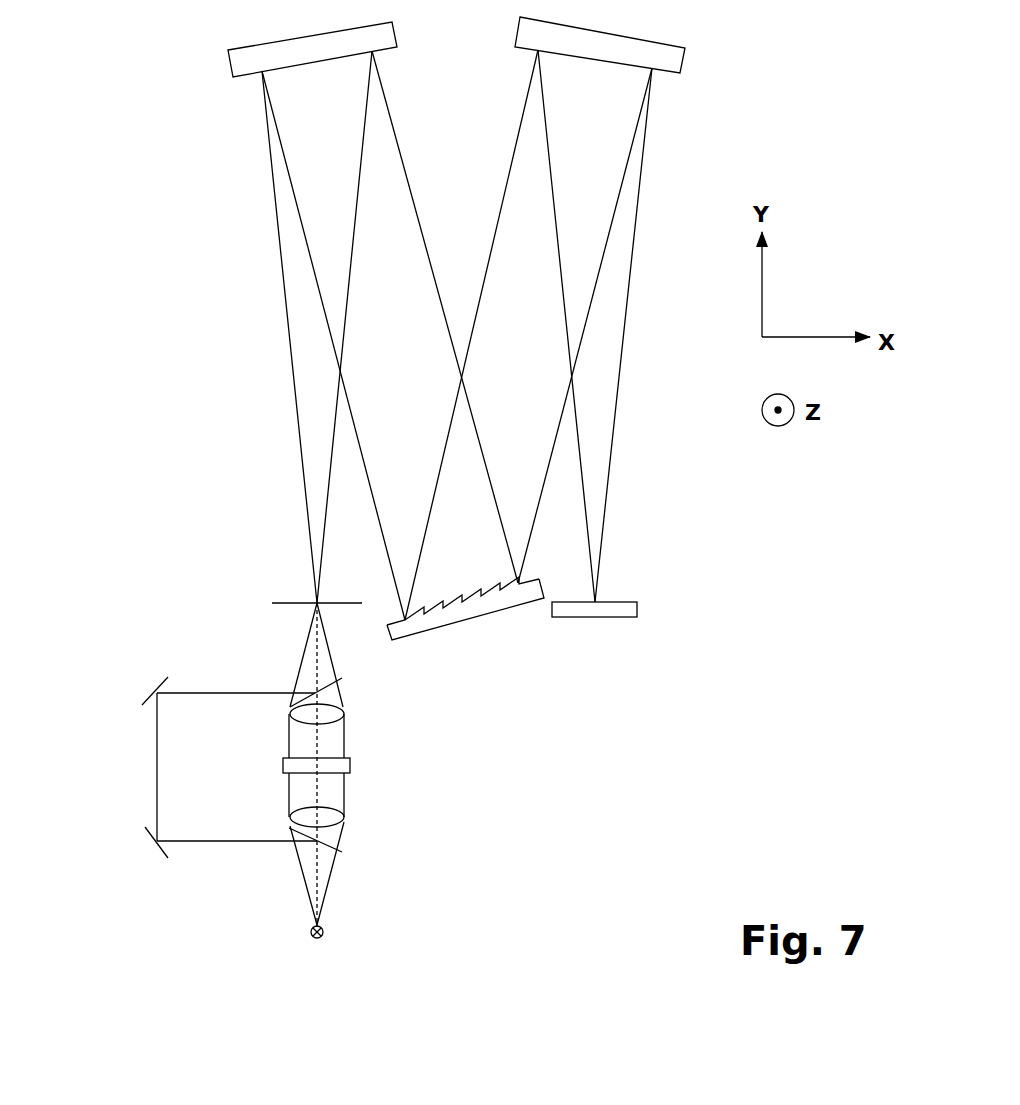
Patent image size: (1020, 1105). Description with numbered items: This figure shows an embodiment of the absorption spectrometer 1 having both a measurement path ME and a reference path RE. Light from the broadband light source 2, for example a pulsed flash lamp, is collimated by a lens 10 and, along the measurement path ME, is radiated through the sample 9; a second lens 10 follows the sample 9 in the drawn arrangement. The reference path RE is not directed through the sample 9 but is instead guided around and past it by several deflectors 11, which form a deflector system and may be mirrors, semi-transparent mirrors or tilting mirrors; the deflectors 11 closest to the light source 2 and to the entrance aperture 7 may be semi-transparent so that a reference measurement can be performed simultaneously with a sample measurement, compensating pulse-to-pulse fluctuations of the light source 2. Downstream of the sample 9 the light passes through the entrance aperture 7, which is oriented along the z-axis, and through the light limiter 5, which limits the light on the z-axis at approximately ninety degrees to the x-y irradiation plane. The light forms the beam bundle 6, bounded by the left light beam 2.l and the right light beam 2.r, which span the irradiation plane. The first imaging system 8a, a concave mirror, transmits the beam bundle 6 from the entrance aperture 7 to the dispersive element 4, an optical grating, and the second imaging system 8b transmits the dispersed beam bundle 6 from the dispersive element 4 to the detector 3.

The spectrometer 1 is at (140, 195).
The light source 2 is at (314, 938).
The left light beam 2.l is at (282, 270).
The right light beam 2.r is at (354, 217).
The detector 3 is at (637, 606).
The dispersive element 4 is at (477, 619).
The light limiter 5 is at (261, 579).
The beam bundle 6 is at (261, 545).
The entrance aperture 7 is at (315, 597).
The first imaging system 8a is at (231, 66).
The second imaging system 8b is at (686, 58).
The sample 9 is at (350, 765).
The lens 10 is at (345, 710).
The deflector 11 is at (315, 693).
The measurement path ME is at (366, 743).
The reference path RE is at (138, 763).